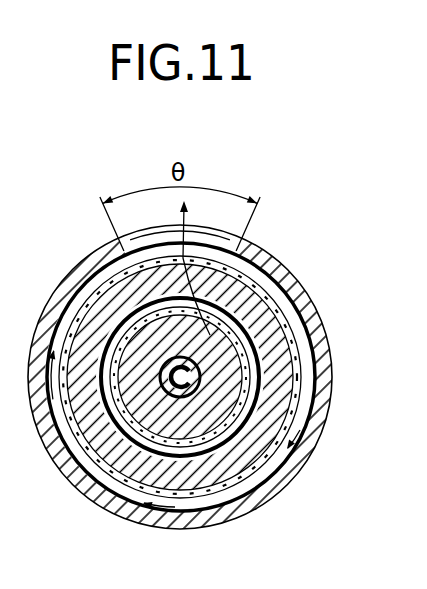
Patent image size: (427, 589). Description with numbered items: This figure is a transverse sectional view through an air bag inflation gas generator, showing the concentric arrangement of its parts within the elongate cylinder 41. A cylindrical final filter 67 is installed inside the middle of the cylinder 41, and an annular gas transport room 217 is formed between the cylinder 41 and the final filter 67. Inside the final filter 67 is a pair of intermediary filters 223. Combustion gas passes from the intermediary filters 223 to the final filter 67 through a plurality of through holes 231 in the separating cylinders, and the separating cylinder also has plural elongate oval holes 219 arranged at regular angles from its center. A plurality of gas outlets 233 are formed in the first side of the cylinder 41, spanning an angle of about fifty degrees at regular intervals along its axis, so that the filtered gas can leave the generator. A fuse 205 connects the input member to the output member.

The elongate cylinder 41 is at (318, 414).
The cylindrical final filter 67 is at (313, 297).
The fuse 205 is at (268, 253).
The annular gas transport room 217 is at (277, 465).
The elongate oval holes 219 is at (305, 368).
The intermediary filters 223 is at (201, 378).
The through holes 231 is at (122, 340).
The gas outlets 233 is at (224, 246).